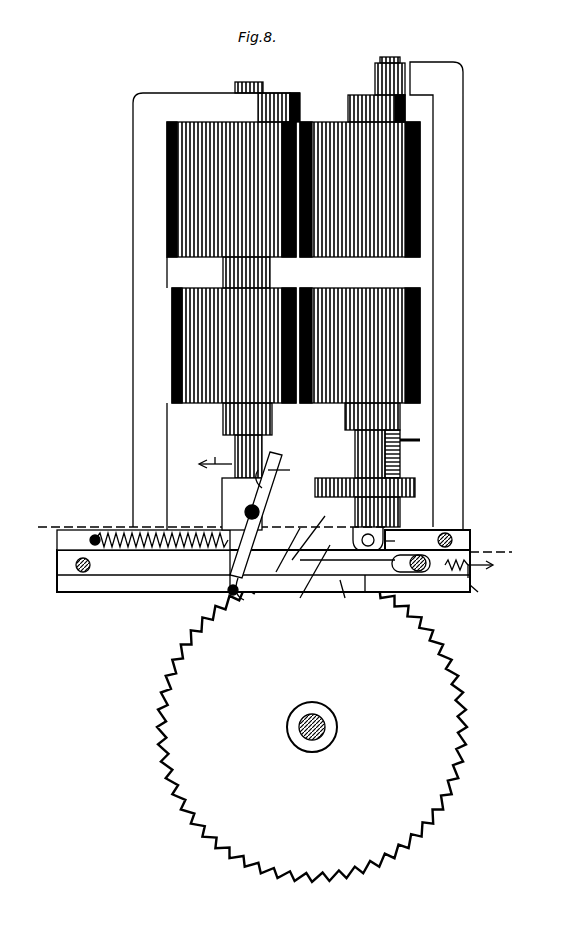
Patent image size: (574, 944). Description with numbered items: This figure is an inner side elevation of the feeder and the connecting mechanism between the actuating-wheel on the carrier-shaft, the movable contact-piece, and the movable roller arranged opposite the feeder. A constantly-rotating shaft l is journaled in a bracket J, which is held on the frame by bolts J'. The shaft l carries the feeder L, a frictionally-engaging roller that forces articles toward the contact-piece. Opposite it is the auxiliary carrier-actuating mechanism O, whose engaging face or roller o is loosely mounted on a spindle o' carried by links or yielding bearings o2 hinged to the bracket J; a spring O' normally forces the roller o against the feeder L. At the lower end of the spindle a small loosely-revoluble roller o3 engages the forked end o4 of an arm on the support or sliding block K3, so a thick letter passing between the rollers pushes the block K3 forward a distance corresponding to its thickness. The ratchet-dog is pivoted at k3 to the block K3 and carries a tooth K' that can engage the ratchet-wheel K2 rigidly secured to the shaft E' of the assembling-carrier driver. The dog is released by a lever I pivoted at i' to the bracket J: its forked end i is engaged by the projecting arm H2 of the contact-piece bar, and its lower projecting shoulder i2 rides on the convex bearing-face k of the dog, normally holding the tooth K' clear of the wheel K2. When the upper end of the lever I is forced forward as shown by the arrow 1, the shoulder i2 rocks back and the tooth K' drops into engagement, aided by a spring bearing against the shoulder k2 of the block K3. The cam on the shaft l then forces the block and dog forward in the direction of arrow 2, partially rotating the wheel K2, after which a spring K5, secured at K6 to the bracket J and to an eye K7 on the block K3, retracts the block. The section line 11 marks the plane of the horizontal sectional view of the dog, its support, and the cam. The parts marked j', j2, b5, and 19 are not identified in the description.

The ratchet-wheel K2 is at (282, 796).
The shaft E' is at (320, 714).
The feeder L is at (180, 213).
The engaging face or roller o is at (374, 309).
The constantly-rotating shaft l is at (244, 90).
The auxiliary carrier-actuating mechanism O is at (365, 97).
The spindle o' is at (381, 76).
The links or yielding bearings o2 is at (405, 512).
The spring O' is at (419, 454).
The forked end o4 is at (358, 530).
The spring attachment point K6 is at (95, 535).
The bolts J' is at (249, 540).
The spring K5 is at (185, 571).
The section line 11 is at (285, 534).
The small loosely-revoluble roller o3 is at (399, 539).
The slot pin j' is at (411, 584).
The support or sliding block K3 is at (450, 572).
The arrow 2 is at (480, 573).
The slot j2 is at (478, 592).
The lug b5 is at (370, 592).
The eye K7 is at (405, 576).
The tooth K' is at (315, 577).
The pivot k3 is at (346, 594).
The bracket J is at (231, 498).
The lever I is at (268, 500).
The pivot i' is at (229, 504).
The forked end i is at (282, 469).
The projecting arm H2 is at (291, 448).
The feed direction arrow 19 is at (352, 456).
The arrow 1 is at (212, 453).
The bearing-face k is at (212, 596).
The shoulder k2 is at (314, 529).
The projecting shoulder i2 is at (247, 593).